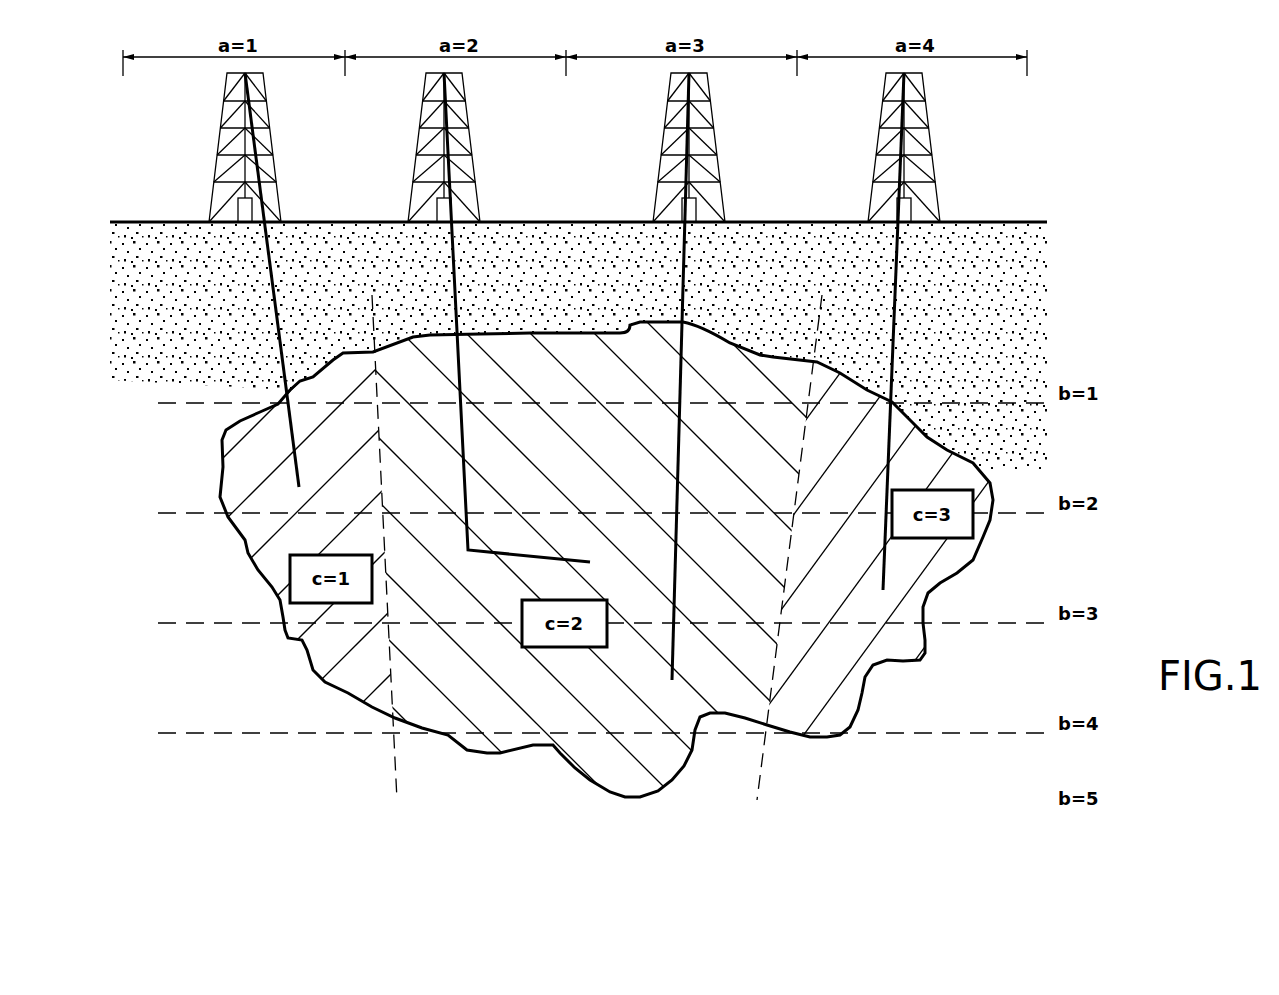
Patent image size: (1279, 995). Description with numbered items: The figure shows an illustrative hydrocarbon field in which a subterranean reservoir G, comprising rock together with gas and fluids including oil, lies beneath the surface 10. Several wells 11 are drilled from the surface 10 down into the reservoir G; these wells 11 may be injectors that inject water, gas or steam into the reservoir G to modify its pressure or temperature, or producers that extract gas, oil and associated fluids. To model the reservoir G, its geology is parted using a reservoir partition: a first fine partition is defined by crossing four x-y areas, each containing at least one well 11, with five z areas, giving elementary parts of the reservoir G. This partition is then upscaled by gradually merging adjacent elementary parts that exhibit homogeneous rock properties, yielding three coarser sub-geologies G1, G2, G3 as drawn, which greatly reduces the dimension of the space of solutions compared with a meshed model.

The surface 10 is at (556, 222).
The well 11 is at (470, 136).
The reservoir G is at (470, 748).
The first sub-geology G1 is at (288, 639).
The second sub-geology G2 is at (563, 648).
The third sub-geology G3 is at (938, 540).